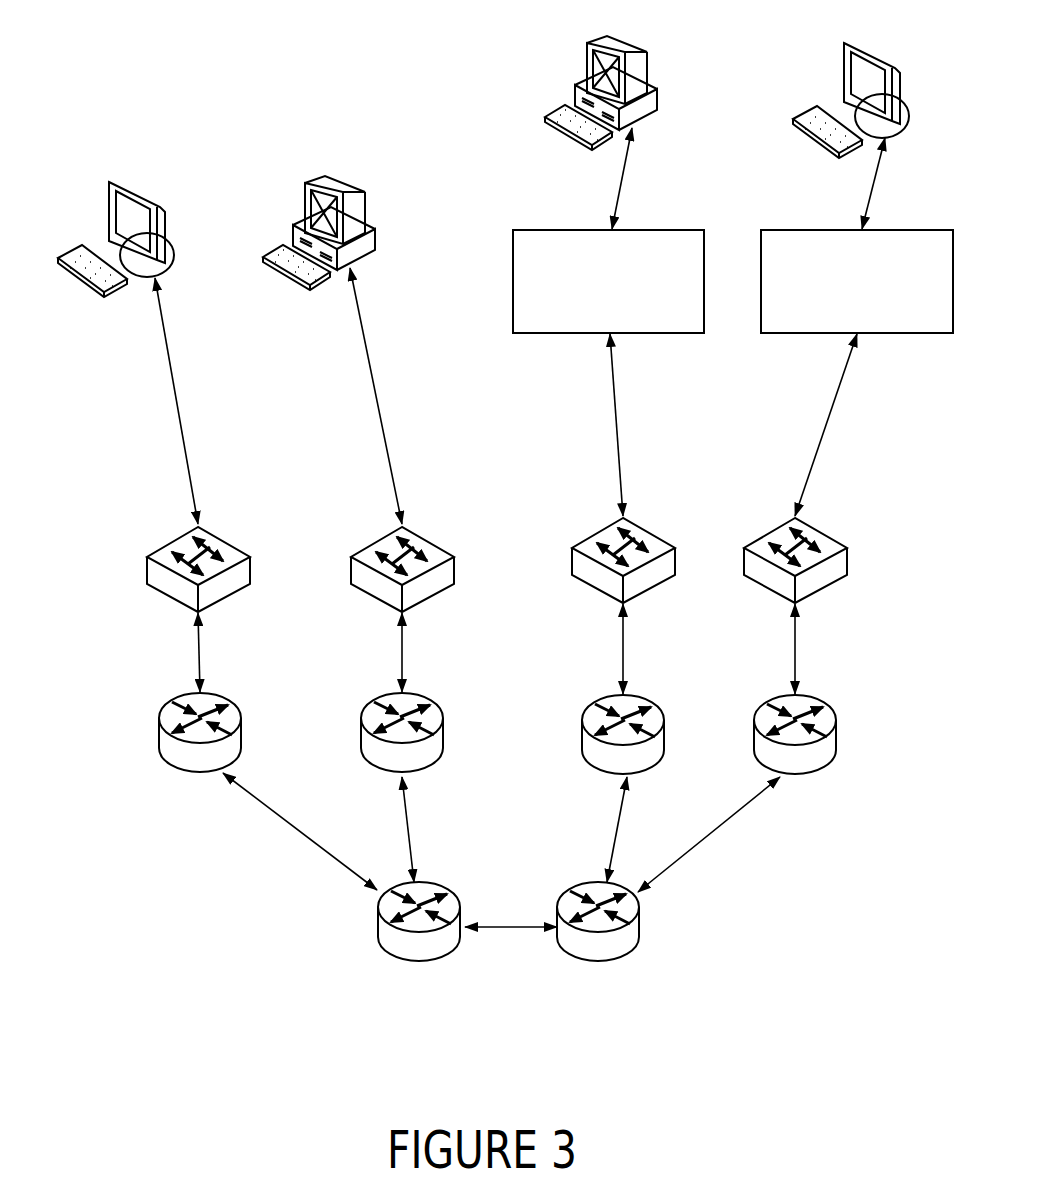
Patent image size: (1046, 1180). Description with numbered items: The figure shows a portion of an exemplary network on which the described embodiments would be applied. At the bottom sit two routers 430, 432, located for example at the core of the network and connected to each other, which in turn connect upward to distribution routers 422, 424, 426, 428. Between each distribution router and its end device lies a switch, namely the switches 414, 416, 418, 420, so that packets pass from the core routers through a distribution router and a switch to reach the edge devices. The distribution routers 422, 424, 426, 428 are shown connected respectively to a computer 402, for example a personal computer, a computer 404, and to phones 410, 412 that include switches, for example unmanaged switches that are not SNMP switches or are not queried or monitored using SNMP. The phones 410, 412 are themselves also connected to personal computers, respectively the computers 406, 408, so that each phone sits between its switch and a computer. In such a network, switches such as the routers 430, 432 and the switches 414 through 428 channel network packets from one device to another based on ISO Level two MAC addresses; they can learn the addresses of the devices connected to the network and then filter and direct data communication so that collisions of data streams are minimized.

The computer 402 is at (87, 290).
The computer 404 is at (313, 292).
The computer 406 is at (562, 132).
The computer 408 is at (807, 135).
The phone 410 is at (520, 333).
The phone 412 is at (768, 335).
The switch 414 is at (148, 587).
The switch 416 is at (352, 587).
The switch 418 is at (572, 577).
The switch 420 is at (743, 577).
The distribution router 422 is at (160, 755).
The distribution router 424 is at (362, 762).
The distribution router 426 is at (582, 757).
The distribution router 428 is at (753, 752).
The router 430 is at (387, 955).
The router 432 is at (568, 957).